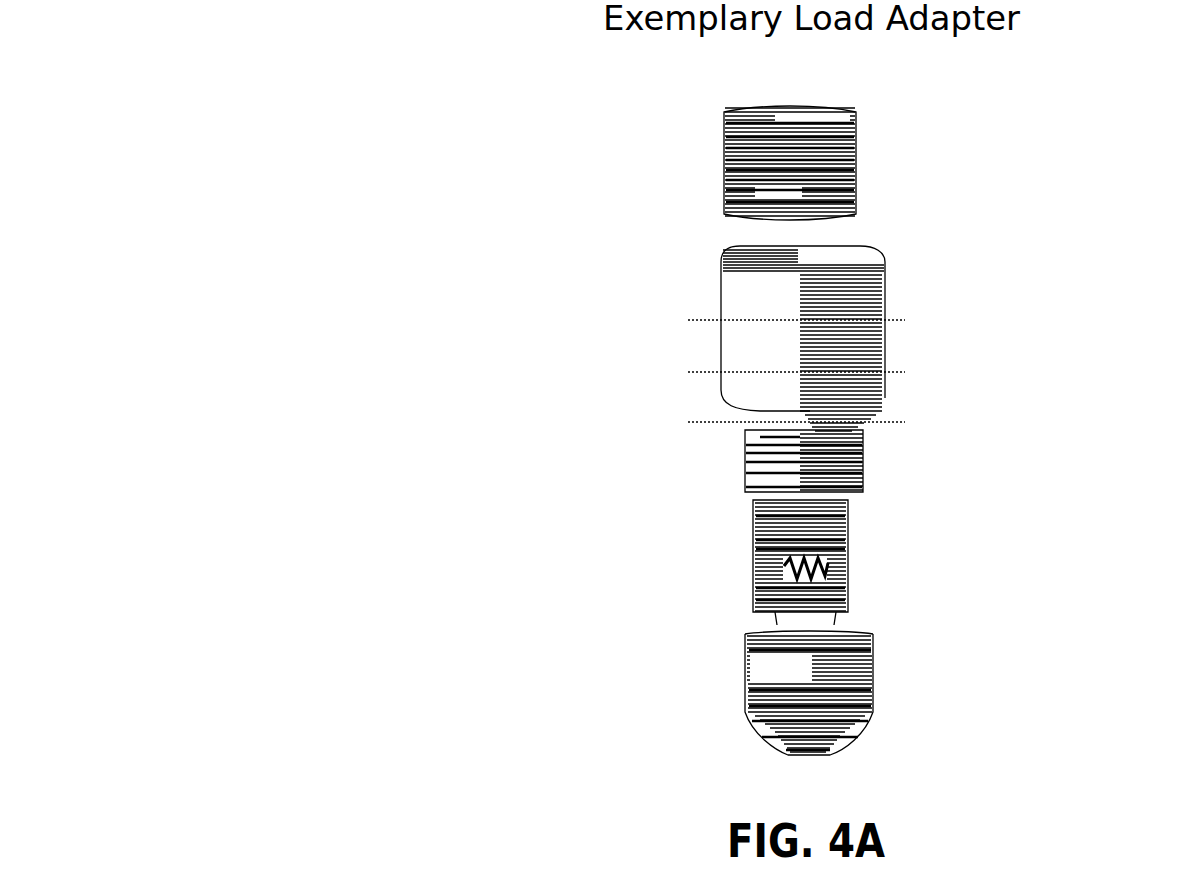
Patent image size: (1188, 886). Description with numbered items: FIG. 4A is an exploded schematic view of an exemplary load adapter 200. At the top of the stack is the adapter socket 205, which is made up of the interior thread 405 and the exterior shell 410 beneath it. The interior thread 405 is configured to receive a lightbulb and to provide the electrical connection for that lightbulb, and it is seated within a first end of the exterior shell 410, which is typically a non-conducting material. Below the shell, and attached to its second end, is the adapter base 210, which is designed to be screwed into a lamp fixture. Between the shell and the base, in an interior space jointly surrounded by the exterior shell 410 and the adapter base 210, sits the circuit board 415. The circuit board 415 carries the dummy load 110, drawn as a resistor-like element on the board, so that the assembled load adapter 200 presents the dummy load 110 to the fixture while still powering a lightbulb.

The load adapter 200 is at (226, 106).
The adapter socket 205 is at (927, 107).
The interior thread 405 is at (735, 160).
The exterior shell 410 is at (750, 347).
The circuit board 415 is at (750, 530).
The dummy load 110 is at (784, 562).
The adapter base 210 is at (911, 693).